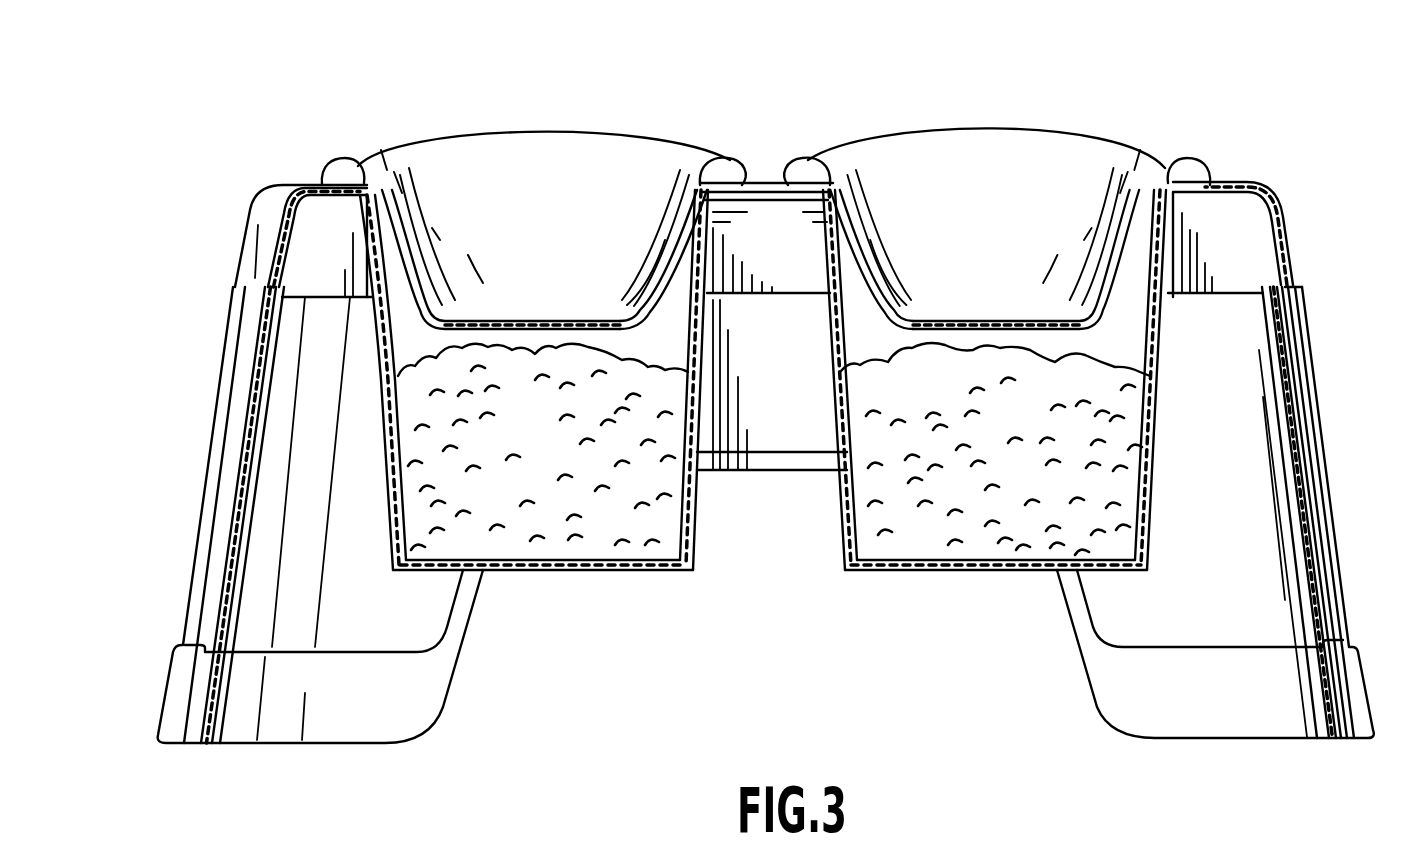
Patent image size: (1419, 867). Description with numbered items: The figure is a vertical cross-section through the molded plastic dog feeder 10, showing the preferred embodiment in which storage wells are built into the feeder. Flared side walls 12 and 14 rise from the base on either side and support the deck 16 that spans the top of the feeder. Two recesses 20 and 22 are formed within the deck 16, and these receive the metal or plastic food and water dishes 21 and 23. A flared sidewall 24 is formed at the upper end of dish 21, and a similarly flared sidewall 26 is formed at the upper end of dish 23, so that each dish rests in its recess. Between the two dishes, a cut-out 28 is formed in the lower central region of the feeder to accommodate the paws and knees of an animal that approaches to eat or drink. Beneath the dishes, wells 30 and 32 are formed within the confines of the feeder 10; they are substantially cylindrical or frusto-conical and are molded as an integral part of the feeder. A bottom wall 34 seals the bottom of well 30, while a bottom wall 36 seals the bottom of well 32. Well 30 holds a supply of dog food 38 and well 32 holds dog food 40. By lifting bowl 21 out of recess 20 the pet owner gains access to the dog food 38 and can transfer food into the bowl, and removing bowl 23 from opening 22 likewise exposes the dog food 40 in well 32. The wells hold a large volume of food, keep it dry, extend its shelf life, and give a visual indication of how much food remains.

The dog feeder 10 is at (743, 462).
The flared side wall 12 is at (1312, 454).
The flared side wall 14 is at (218, 484).
The deck 16 is at (764, 186).
The recess 20 is at (685, 242).
The dish 21 is at (478, 177).
The recess 22 is at (1143, 212).
The dish 23 is at (1017, 184).
The flared sidewall 24 is at (325, 166).
The flared sidewall 26 is at (1195, 158).
The cut-out 28 is at (760, 477).
The well 30 is at (519, 424).
The well 32 is at (1015, 424).
The bottom wall 34 is at (593, 571).
The bottom wall 36 is at (985, 575).
The dog food 38 is at (541, 442).
The dog food 40 is at (1024, 430).